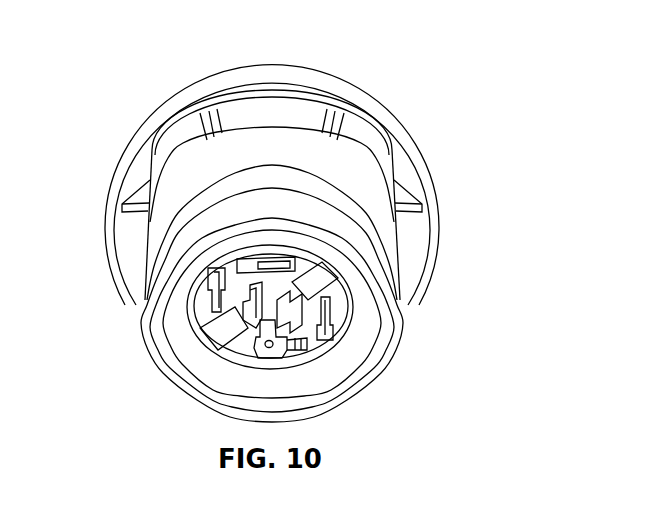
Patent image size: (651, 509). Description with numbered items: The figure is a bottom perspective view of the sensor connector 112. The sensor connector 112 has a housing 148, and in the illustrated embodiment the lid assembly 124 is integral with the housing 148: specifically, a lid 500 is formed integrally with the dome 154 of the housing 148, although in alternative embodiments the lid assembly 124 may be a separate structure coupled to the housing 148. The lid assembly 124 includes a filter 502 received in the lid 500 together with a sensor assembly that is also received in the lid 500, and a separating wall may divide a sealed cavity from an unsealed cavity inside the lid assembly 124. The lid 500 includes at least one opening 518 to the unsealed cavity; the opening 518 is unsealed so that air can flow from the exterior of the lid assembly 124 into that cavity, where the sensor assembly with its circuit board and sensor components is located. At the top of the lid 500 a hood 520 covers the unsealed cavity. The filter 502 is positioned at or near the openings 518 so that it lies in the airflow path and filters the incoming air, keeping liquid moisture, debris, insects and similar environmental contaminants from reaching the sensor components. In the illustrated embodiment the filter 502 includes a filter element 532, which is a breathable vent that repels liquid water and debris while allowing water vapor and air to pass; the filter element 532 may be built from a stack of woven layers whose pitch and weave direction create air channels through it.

The sensor connector 112 is at (433, 99).
The lid assembly 124 is at (163, 113).
The housing 148 is at (142, 284).
The dome 154 is at (370, 212).
The lid 500 is at (343, 93).
The filter 502 is at (279, 115).
The opening 518 is at (230, 122).
The hood 520 is at (118, 182).
The filter element 532 is at (252, 115).